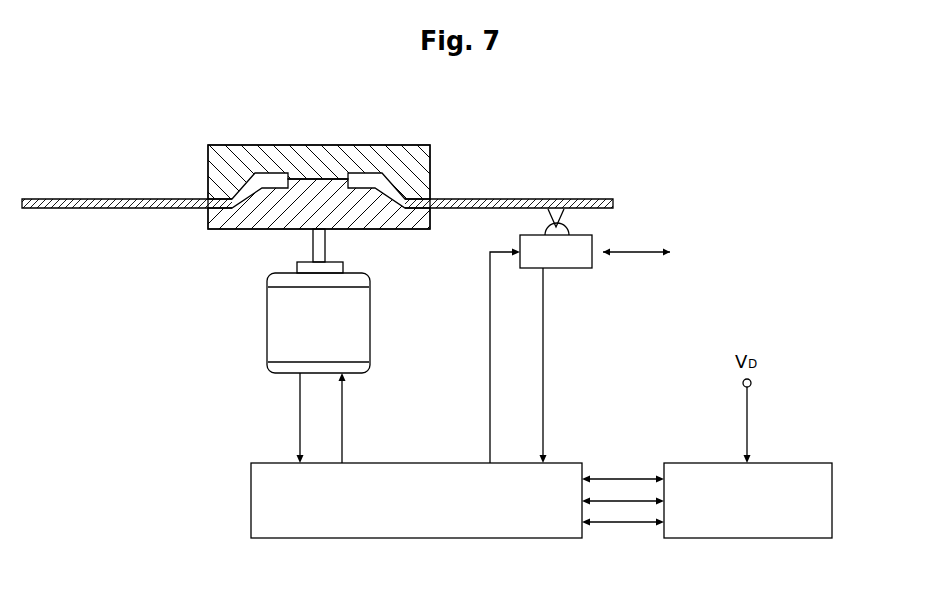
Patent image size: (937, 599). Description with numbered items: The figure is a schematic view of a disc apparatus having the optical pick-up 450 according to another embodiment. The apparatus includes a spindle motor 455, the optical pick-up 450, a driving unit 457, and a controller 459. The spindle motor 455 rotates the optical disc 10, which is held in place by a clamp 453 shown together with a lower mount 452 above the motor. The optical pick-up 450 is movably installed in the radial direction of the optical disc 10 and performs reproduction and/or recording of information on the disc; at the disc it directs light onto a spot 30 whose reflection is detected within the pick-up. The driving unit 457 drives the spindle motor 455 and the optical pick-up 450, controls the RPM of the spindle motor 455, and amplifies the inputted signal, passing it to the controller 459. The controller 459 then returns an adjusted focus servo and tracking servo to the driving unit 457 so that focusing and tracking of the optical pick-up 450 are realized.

The optical disc 10 is at (592, 199).
The bending portion 30 is at (547, 229).
The optical pick-up 450 is at (574, 266).
The lower jig 452 is at (250, 224).
The clamp 453 is at (238, 152).
The spindle motor 455 is at (267, 322).
The driving unit 457 is at (251, 502).
The controller 459 is at (832, 500).